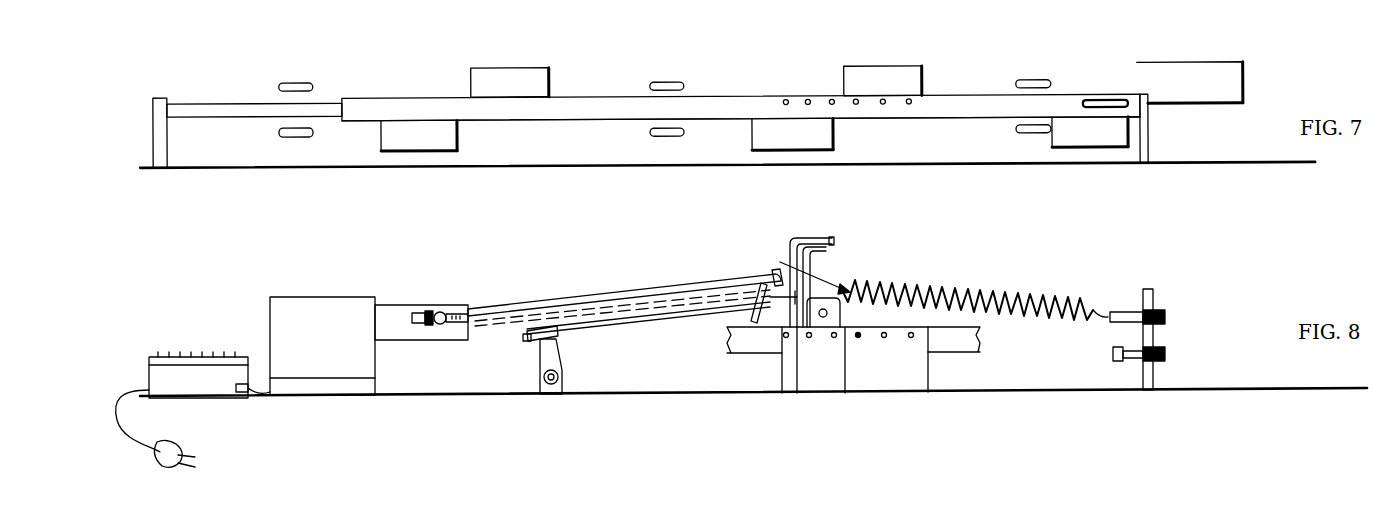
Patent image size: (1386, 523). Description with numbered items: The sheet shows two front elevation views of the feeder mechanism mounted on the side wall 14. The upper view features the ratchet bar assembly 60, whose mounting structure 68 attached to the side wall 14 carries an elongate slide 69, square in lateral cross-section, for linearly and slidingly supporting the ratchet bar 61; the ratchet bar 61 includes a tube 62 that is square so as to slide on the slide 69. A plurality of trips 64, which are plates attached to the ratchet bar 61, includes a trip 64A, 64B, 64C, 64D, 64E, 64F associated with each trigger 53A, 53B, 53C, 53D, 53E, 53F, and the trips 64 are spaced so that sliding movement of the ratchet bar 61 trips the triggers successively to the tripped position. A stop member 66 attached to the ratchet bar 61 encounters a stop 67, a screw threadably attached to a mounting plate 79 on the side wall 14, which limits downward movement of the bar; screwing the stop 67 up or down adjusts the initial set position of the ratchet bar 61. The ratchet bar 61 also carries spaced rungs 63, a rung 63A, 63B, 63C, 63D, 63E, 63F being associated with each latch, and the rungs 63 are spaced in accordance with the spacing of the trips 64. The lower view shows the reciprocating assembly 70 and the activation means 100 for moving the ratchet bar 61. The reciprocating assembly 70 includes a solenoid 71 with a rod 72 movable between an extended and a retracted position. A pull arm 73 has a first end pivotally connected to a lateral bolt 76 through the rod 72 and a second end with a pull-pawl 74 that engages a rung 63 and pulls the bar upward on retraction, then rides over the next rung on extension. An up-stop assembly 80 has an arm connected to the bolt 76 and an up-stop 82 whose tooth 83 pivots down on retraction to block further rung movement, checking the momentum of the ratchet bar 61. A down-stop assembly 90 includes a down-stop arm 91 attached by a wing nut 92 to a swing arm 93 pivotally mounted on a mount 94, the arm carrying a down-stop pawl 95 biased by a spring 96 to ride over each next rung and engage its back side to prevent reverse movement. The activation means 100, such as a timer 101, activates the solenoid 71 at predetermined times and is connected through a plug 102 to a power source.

In FIG. 7, the side wall 14 is at (1283, 160).
In FIG. 8, the side wall 14 is at (1207, 388).
In FIG. 7, the ratchet bar assembly 60 is at (237, 72).
In FIG. 7, the ratchet bar 61 is at (362, 96).
In FIG. 8, the ratchet bar 61 is at (978, 340).
In FIG. 7, the tube 62 is at (425, 100).
In FIG. 7, the rungs 63 is at (808, 93).
In FIG. 8, the rung 63A is at (784, 338).
In FIG. 8, the rung 63B is at (809, 338).
In FIG. 8, the rung 63C is at (834, 338).
In FIG. 8, the rung 63D is at (858, 338).
In FIG. 8, the rung 63E is at (884, 338).
In FIG. 8, the rung 63F is at (911, 338).
In FIG. 7, the trips 64 is at (1080, 139).
In FIG. 7, the trip 64A is at (1108, 140).
In FIG. 7, the trip 64B is at (772, 145).
In FIG. 7, the trip 64C is at (420, 150).
In FIG. 7, the trip 64D is at (1190, 72).
In FIG. 7, the trip 64E is at (866, 72).
In FIG. 7, the trip 64F is at (515, 68).
In FIG. 7, the trigger 53A is at (1018, 131).
In FIG. 7, the trigger 53B is at (668, 137).
In FIG. 7, the trigger 53C is at (296, 134).
In FIG. 7, the trigger 53D is at (1034, 84).
In FIG. 7, the trigger 53E is at (672, 87).
In FIG. 7, the trigger 53F is at (298, 82).
In FIG. 7, the stop member 66 is at (1098, 102).
In FIG. 7, the mounting structure 68 is at (200, 102).
In FIG. 7, the slide 69 is at (255, 101).
In FIG. 8, the reciprocating assembly 70 is at (312, 248).
In FIG. 8, the solenoid 71 is at (340, 305).
In FIG. 8, the rod 72 is at (394, 308).
In FIG. 8, the pull arm 73 is at (518, 318).
In FIG. 8, the pull-pawl 74 is at (834, 240).
In FIG. 8, the lateral bolt 76 is at (455, 313).
In FIG. 8, the mounting plate 79 is at (1148, 373).
In FIG. 8, the up-stop assembly 80 is at (608, 292).
In FIG. 8, the up-stop 82 is at (770, 264).
In FIG. 8, the tooth 83 is at (724, 316).
In FIG. 8, the down-stop assembly 90 is at (563, 412).
In FIG. 8, the down-stop arm 91 is at (638, 328).
In FIG. 8, the wing nut 92 is at (523, 346).
In FIG. 8, the swing arm 93 is at (560, 350).
In FIG. 8, the mount 94 is at (565, 385).
In FIG. 8, the down-stop pawl 95 is at (790, 242).
In FIG. 8, the spring 96 is at (1000, 288).
In FIG. 8, the activation means 100 is at (152, 330).
In FIG. 8, the timer 101 is at (220, 372).
In FIG. 8, the plug 102 is at (175, 446).
In FIG. 8, the stop 67 is at (1110, 352).